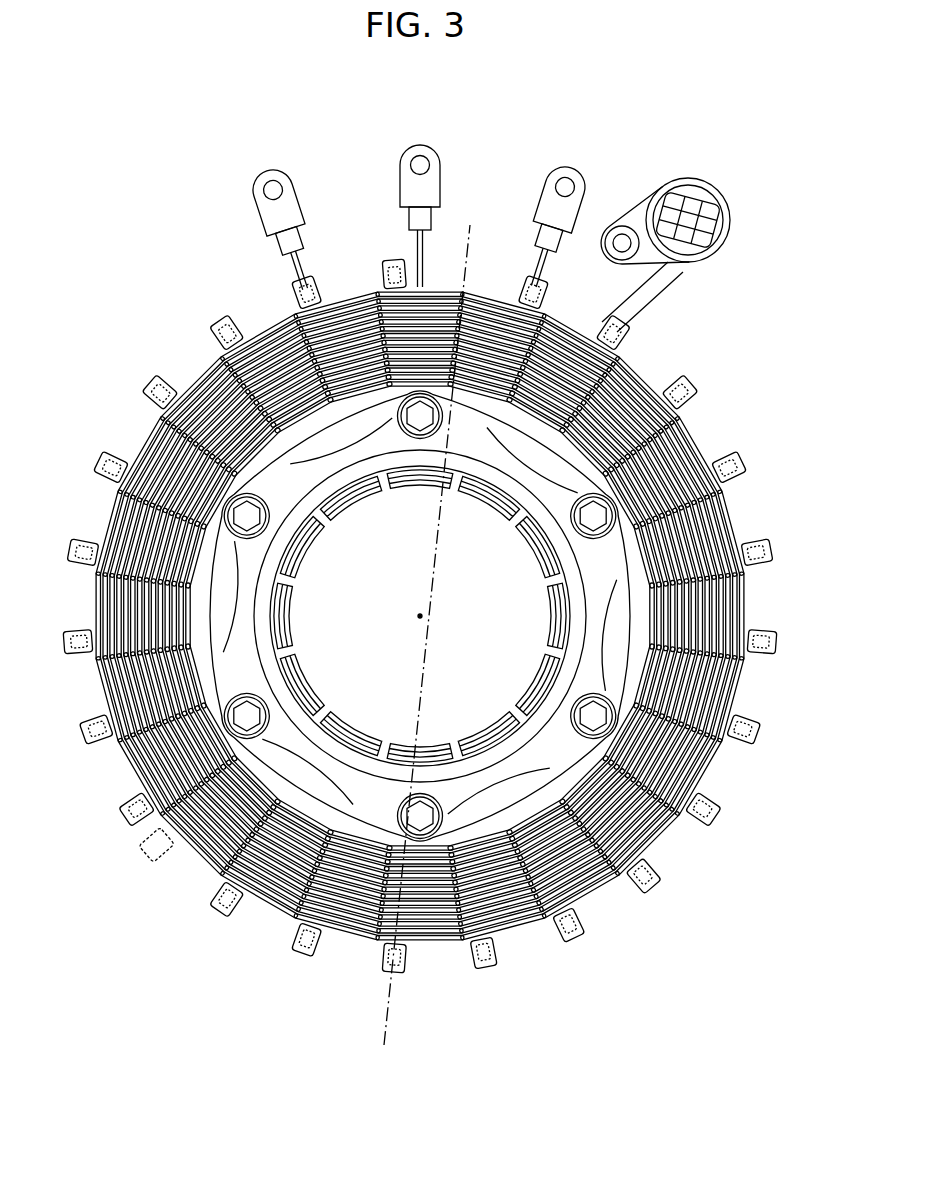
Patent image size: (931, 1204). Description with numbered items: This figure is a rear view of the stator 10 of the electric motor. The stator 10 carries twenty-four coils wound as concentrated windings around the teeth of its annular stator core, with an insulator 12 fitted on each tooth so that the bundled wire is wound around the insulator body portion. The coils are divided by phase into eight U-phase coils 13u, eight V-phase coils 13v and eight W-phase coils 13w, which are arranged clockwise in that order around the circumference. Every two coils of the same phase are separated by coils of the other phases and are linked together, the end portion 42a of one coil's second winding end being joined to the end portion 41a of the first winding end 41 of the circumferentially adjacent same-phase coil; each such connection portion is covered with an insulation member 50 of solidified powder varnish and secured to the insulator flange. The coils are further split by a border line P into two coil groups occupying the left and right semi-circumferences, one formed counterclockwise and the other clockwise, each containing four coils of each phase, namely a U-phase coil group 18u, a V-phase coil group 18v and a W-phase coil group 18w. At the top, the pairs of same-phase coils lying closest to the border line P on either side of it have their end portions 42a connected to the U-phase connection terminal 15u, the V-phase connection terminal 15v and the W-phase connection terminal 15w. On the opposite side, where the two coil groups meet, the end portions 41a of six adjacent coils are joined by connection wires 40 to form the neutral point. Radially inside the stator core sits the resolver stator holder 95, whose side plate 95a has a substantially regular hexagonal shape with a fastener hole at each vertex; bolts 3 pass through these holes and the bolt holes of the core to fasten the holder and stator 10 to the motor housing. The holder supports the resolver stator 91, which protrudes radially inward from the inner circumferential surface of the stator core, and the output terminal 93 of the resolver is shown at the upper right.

The stator 10 is at (492, 118).
The insulator 12 is at (83, 620).
The U-phase coil 13u is at (448, 305).
The V-phase coil 13v is at (345, 318).
The W-phase coil 13w is at (500, 305).
The U-phase connection terminal 15u is at (567, 167).
The V-phase connection terminal 15v is at (420, 145).
The W-phase connection terminal 15w is at (268, 170).
The U-phase coil group 18u is at (170, 372).
The V-phase coil group 18v is at (108, 452).
The W-phase coil group 18w is at (100, 528).
The connection wire 40 is at (222, 905).
The first winding end 41 is at (705, 790).
The end portion of the first winding end 41a is at (158, 388).
The end portion of the second winding end 42a is at (300, 268).
The insulation member 50 is at (108, 464).
The resolver stator 91 is at (416, 489).
The output terminal 93 is at (660, 182).
The resolver stator holder 95 is at (535, 446).
The side plate 95a is at (605, 598).
The bolt 3 is at (600, 515).
The border line P is at (423, 650).